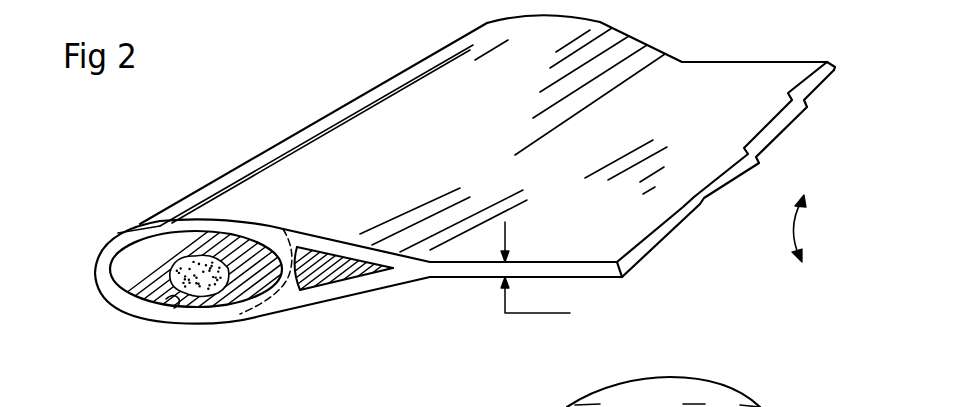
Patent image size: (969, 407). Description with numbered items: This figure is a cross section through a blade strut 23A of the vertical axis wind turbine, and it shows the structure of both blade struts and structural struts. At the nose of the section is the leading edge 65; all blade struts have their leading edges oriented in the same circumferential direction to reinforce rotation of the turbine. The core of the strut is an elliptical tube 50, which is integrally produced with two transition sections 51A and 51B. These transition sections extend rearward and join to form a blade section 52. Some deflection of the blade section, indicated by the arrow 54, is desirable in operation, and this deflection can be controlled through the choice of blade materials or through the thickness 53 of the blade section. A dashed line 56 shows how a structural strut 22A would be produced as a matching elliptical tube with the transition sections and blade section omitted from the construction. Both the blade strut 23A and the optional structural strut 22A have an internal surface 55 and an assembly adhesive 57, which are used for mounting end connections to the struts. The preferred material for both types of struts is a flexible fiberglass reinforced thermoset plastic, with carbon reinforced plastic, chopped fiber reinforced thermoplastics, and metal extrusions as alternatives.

The structural strut 22A is at (148, 221).
The blade strut 23A is at (372, 123).
The elliptical tube 50 is at (128, 302).
The transition section 51A is at (347, 247).
The transition section 51B is at (350, 292).
The blade section 52 is at (750, 80).
The thickness 53 is at (555, 278).
The arrow 54 is at (818, 228).
The internal surface 55 is at (168, 299).
The dashed line 56 is at (283, 229).
The assembly adhesive 57 is at (208, 256).
The leading edge 65 is at (95, 277).